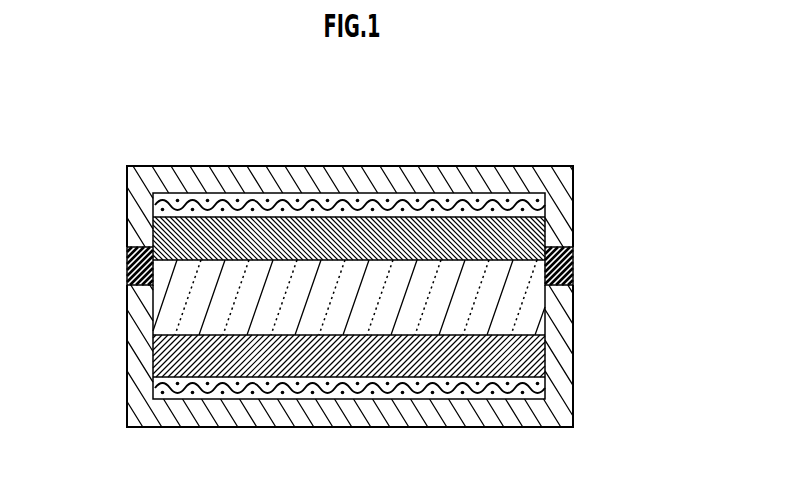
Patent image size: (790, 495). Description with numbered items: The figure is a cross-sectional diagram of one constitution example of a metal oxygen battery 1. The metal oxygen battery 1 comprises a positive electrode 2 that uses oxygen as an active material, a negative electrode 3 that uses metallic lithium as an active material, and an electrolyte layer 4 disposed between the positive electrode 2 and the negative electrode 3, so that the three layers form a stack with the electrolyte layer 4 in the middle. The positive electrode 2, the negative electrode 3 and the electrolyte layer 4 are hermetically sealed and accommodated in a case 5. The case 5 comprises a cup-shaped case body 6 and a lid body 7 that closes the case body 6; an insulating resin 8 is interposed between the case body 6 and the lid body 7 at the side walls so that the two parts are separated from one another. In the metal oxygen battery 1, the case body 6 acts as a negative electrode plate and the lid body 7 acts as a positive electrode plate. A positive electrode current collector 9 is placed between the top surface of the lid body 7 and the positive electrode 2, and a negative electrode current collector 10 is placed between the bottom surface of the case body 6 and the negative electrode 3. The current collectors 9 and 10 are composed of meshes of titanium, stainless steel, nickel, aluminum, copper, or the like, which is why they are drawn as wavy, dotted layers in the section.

The metal oxygen battery 1 is at (618, 133).
The positive electrode 2 is at (545, 228).
The negative electrode 3 is at (545, 352).
The electrolyte layer 4 is at (545, 306).
The case 5 is at (78, 212).
The case body 6 is at (127, 312).
The lid body 7 is at (127, 231).
The insulating resin 8 is at (127, 270).
The positive electrode current collector 9 is at (545, 200).
The negative electrode current collector 10 is at (545, 385).